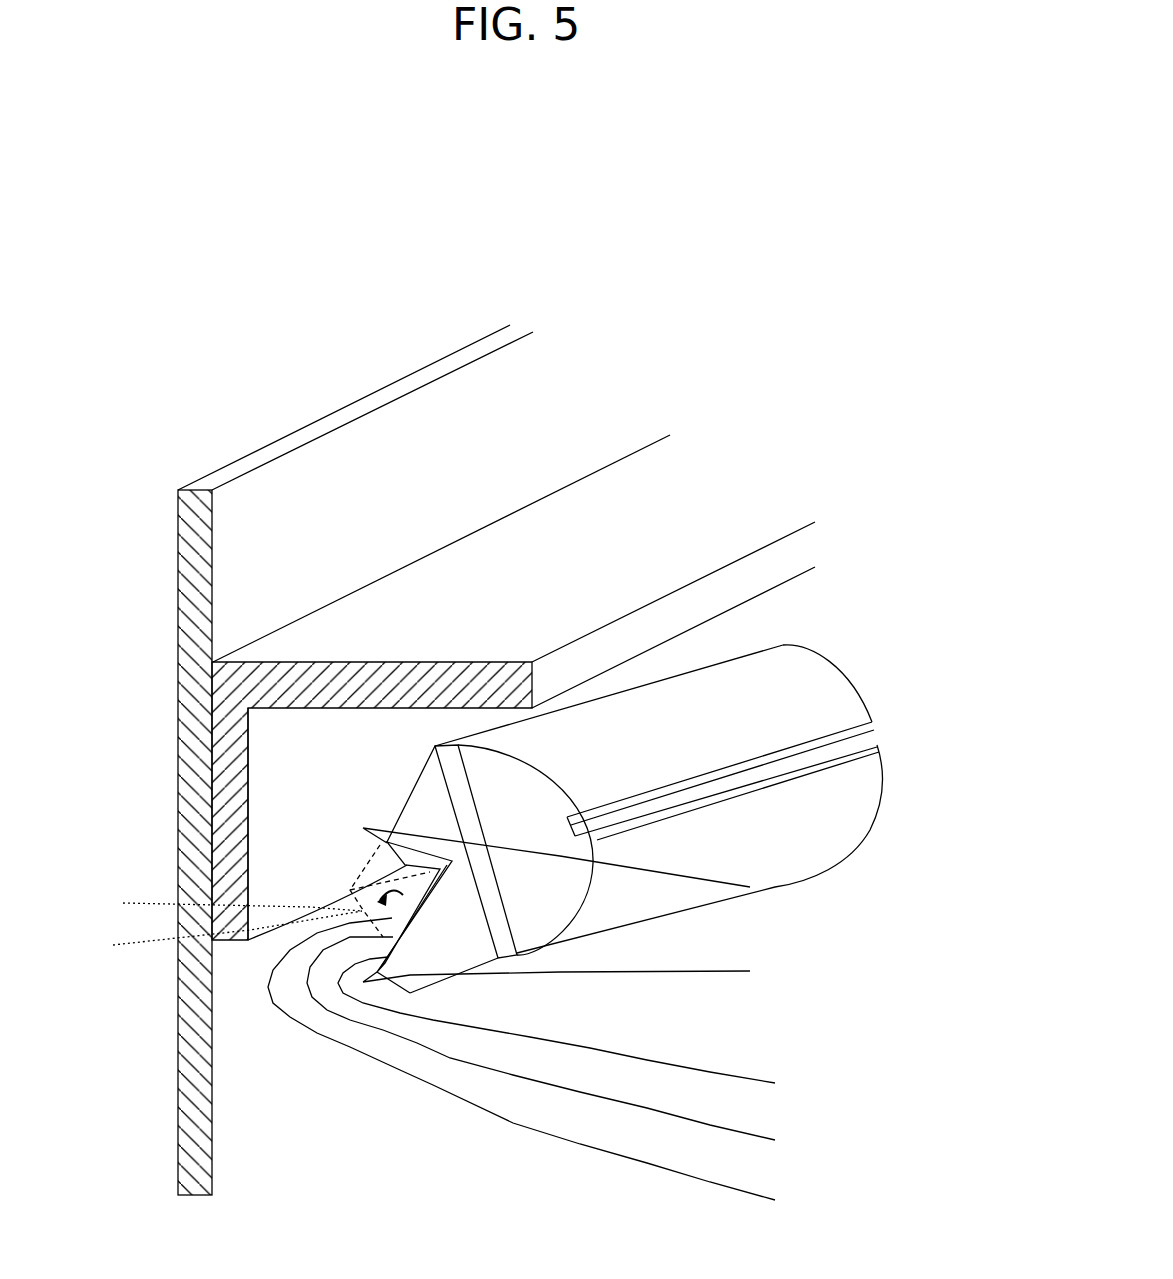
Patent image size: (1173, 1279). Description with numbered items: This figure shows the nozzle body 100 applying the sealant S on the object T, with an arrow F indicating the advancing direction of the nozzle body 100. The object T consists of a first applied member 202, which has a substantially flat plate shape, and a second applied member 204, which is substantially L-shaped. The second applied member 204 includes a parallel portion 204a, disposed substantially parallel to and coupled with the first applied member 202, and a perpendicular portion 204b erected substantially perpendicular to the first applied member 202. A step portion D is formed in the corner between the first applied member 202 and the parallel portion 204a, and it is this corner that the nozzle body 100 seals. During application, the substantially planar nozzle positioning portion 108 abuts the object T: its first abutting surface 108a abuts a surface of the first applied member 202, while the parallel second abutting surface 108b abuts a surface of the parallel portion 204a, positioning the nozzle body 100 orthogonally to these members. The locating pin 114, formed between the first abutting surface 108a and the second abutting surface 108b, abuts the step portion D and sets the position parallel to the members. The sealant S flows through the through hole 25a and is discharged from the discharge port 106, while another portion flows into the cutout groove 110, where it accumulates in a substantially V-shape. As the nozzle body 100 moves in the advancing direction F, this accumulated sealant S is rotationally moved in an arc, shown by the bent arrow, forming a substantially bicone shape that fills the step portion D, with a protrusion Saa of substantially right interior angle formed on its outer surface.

The nozzle body 100 is at (498, 256).
The nozzle positioning portion 108 is at (915, 893).
The first abutting surface 108a is at (750, 887).
The second abutting surface 108b is at (750, 971).
The cutout groove 110 is at (583, 1030).
The discharge port 106 is at (567, 1050).
The through hole 25a is at (547, 1068).
The locating pin 114 is at (385, 847).
The first applied member 202 is at (178, 565).
The second applied member 204 is at (212, 747).
The parallel portion 204a is at (230, 850).
The perpendicular portion 204b is at (315, 680).
The object T is at (175, 382).
The advancing direction F is at (383, 83).
The sealant S is at (226, 938).
The protrusion Saa is at (215, 903).
The step portion D is at (248, 940).